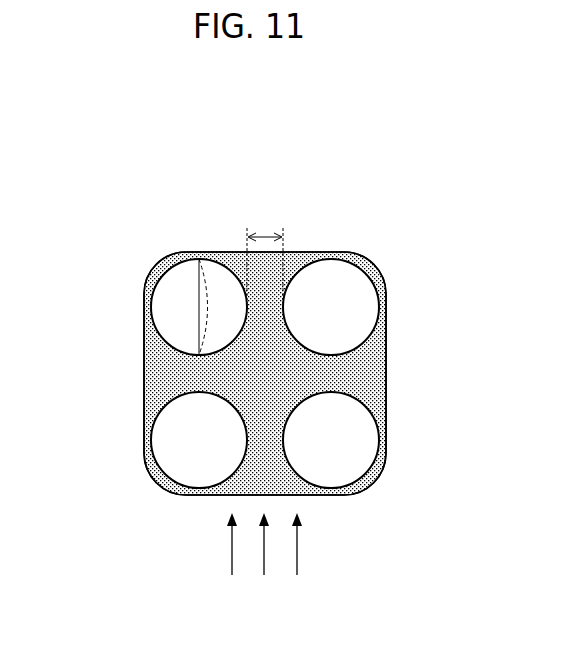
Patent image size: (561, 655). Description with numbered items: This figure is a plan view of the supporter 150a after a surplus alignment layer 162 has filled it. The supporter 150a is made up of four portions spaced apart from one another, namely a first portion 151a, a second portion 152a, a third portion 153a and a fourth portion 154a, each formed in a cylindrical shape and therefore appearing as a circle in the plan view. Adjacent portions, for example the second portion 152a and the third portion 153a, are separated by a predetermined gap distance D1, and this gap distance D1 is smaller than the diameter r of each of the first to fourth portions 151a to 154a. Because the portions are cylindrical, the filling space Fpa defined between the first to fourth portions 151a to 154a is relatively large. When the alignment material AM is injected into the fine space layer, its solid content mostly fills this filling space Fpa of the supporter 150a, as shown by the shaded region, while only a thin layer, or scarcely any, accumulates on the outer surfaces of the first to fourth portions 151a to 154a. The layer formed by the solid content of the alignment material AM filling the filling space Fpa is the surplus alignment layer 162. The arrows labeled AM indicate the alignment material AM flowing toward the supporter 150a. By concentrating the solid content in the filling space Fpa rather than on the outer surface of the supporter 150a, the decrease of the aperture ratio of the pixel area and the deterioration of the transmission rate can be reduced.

The supporter 150a is at (329, 213).
The first portion 151a is at (168, 441).
The second portion 152a is at (168, 309).
The third portion 153a is at (357, 311).
The fourth portion 154a is at (357, 443).
The surplus alignment layer 162 is at (365, 373).
The filling space Fpa is at (250, 392).
The gap distance D1 is at (265, 251).
The diameter r is at (206, 307).
The alignment material AM is at (264, 562).